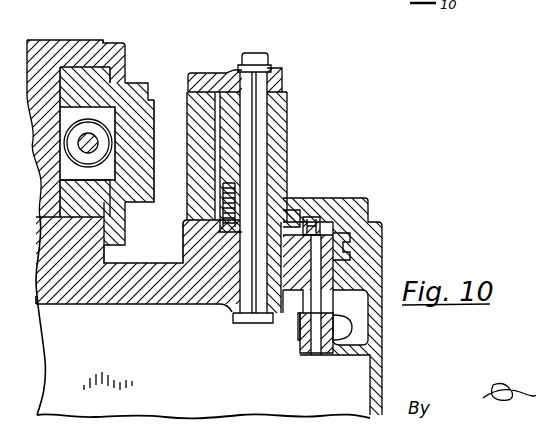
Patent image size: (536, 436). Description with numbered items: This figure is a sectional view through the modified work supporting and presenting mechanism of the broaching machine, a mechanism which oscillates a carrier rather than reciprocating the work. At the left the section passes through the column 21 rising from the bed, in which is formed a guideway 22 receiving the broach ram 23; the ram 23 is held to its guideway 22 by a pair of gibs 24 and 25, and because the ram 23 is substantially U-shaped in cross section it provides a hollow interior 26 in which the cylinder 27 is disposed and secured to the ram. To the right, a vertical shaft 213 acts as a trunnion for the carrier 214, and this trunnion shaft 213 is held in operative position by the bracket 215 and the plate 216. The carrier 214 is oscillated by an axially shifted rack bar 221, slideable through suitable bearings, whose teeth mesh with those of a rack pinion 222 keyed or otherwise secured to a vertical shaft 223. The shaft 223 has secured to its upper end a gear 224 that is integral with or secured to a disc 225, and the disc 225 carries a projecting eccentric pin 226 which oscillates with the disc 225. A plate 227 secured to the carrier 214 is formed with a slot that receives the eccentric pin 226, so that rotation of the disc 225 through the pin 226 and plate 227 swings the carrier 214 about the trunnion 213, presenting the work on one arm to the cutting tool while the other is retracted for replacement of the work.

The column 21 is at (54, 46).
The guideway 22 is at (57, 64).
The broach ram 23 is at (70, 66).
The gib 24 is at (118, 48).
The gib 25 is at (118, 233).
The hollow interior 26 is at (110, 123).
The cylinder 27 is at (110, 144).
The vertical shaft 213 is at (267, 127).
The carrier 214 is at (286, 97).
The bracket 215 is at (190, 102).
The plate 216 is at (216, 74).
The rack bar 221 is at (355, 327).
The rack pinion 222 is at (298, 323).
The vertical shaft 223 is at (312, 354).
The gear 224 is at (343, 257).
The disc 225 is at (353, 238).
The eccentric pin 226 is at (312, 216).
The plate 227 is at (281, 218).